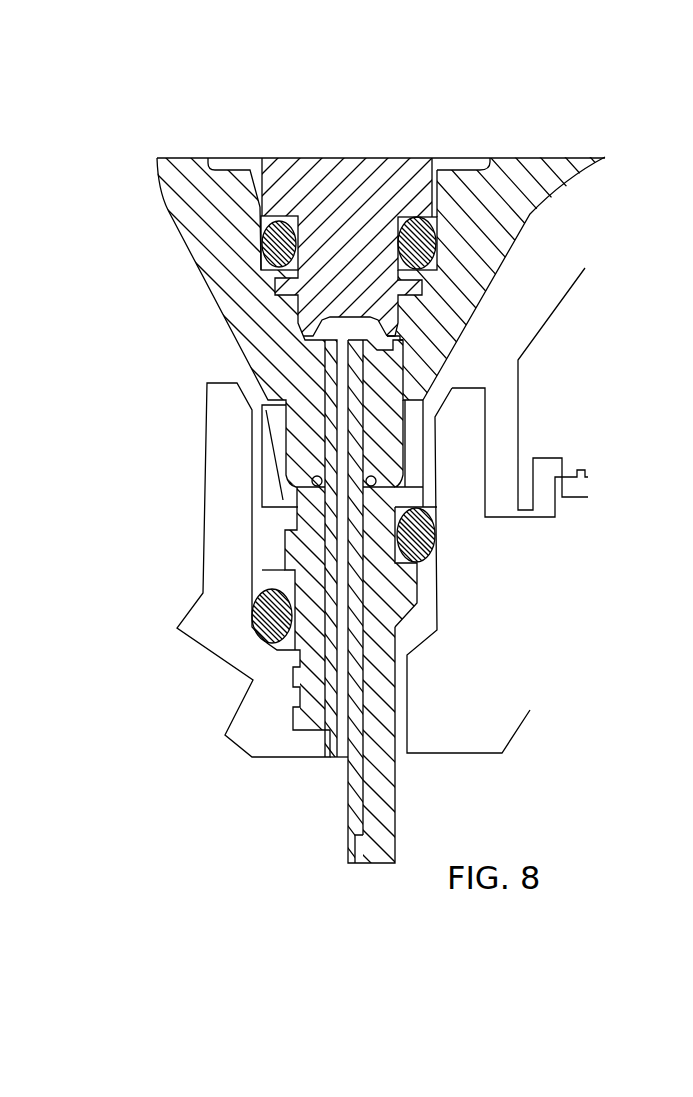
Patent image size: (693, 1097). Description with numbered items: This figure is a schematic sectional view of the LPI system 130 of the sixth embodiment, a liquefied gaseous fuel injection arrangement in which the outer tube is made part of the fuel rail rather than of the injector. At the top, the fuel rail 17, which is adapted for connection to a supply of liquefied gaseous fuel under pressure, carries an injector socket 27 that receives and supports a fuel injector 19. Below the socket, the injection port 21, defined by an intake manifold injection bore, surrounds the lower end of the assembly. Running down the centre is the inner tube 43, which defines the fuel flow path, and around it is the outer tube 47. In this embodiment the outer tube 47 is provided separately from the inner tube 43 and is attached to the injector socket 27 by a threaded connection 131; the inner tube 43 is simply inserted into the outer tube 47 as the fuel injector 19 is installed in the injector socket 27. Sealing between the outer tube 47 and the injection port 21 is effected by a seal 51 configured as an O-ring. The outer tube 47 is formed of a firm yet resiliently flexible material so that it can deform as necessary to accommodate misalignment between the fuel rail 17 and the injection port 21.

The LPI system 130 is at (146, 239).
The injector socket 27 is at (238, 293).
The fuel rail 17 is at (492, 226).
The fuel injector 19 is at (405, 189).
The threaded connection 131 is at (285, 447).
The outer tube 47 is at (310, 507).
The inner tube 43 is at (333, 552).
The seal 51 is at (250, 612).
The injection port 21 is at (245, 723).